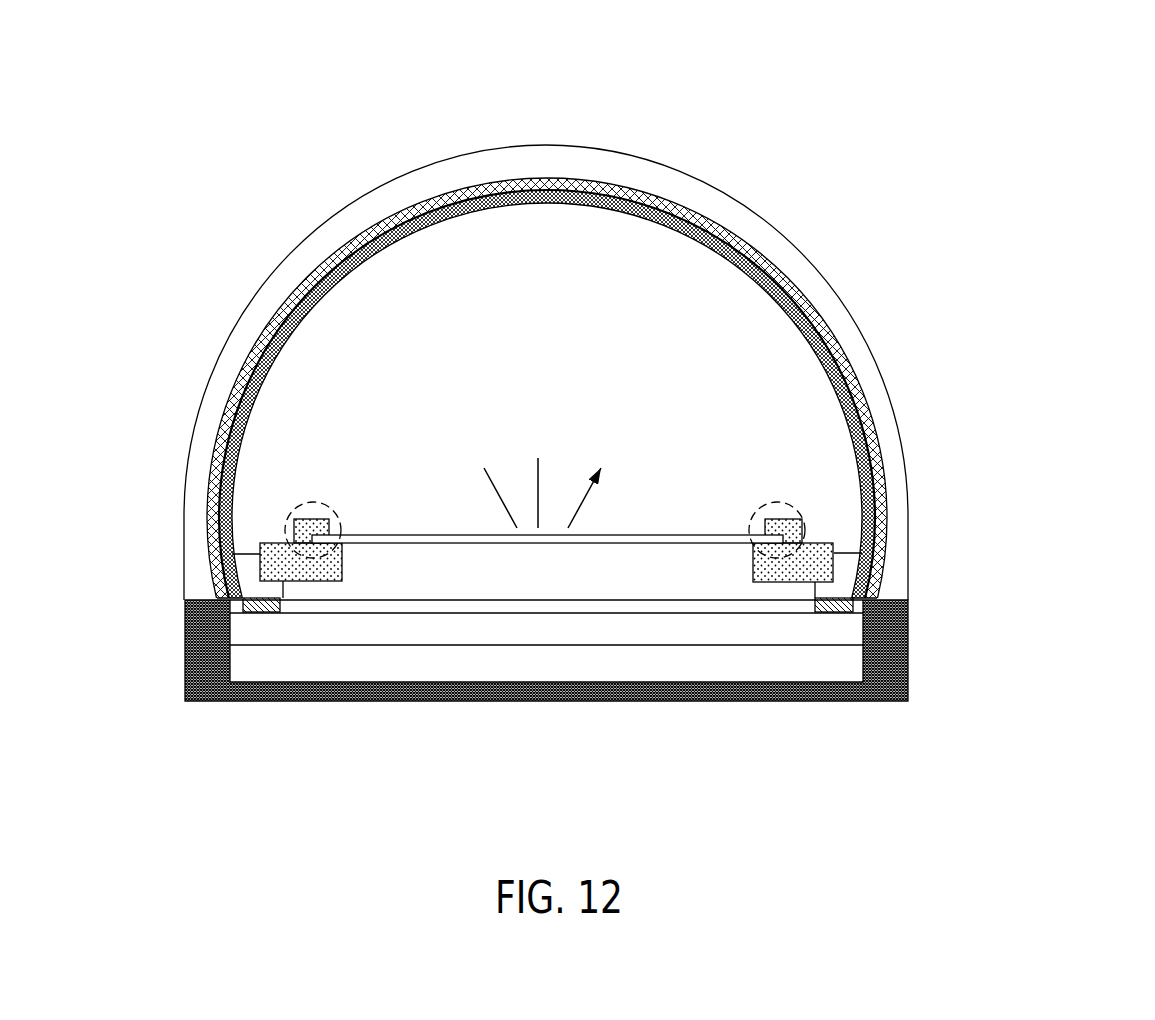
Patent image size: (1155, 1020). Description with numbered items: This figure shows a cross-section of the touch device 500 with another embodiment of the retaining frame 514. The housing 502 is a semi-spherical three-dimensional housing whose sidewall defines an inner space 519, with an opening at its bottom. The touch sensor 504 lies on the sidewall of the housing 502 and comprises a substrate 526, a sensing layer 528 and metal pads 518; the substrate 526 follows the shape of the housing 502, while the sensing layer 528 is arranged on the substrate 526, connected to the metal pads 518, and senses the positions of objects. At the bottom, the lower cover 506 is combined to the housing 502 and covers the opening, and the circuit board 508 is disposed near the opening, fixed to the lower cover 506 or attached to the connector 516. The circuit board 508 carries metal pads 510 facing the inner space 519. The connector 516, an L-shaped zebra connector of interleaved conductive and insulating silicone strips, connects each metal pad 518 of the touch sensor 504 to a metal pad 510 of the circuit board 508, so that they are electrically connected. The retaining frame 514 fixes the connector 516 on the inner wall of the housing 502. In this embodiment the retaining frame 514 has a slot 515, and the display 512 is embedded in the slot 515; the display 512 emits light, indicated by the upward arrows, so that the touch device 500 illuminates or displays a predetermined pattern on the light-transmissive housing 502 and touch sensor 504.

The touch device 500 is at (1004, 154).
The housing 502 is at (797, 256).
The touch sensor 504 is at (367, 368).
The lower cover 506 is at (907, 690).
The circuit board 508 is at (553, 635).
The metal pad 510 is at (280, 604).
The display 512 is at (663, 540).
The retaining frame 514 is at (336, 563).
The slot 515 is at (341, 520).
The connector 516 is at (292, 522).
The metal pad 518 is at (248, 553).
The inner space 519 is at (432, 280).
The substrate 526 is at (262, 391).
The sensing layer 528 is at (253, 441).